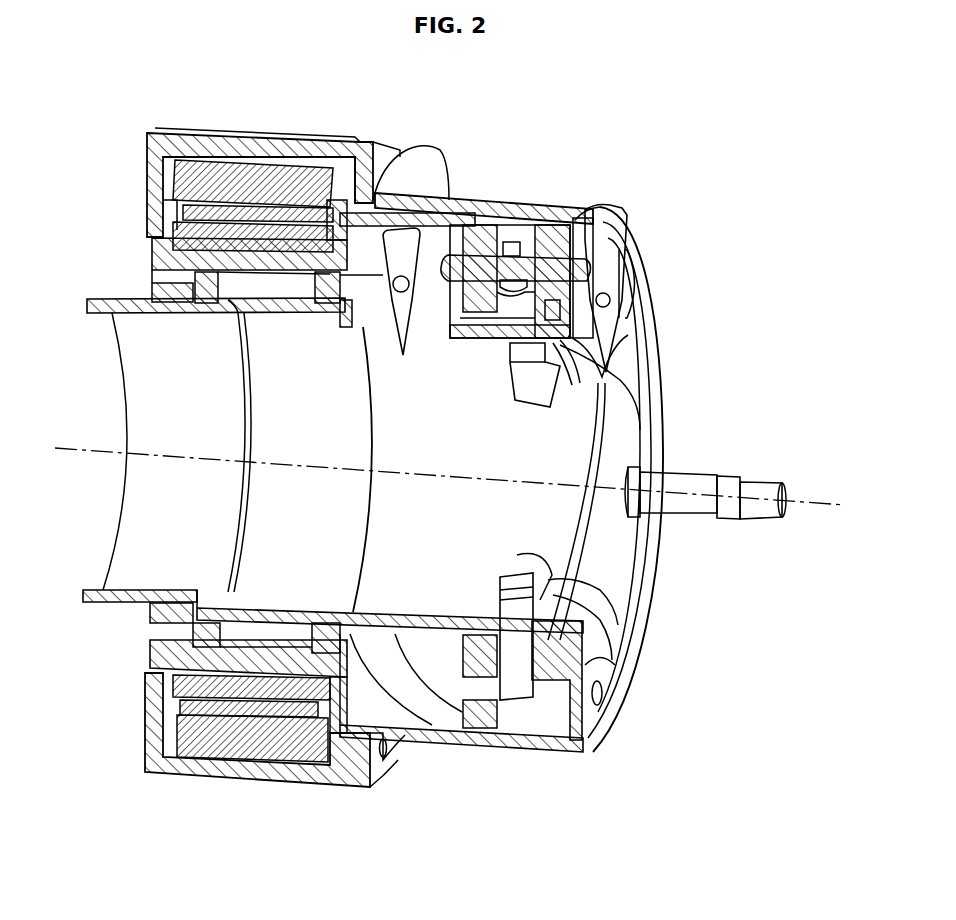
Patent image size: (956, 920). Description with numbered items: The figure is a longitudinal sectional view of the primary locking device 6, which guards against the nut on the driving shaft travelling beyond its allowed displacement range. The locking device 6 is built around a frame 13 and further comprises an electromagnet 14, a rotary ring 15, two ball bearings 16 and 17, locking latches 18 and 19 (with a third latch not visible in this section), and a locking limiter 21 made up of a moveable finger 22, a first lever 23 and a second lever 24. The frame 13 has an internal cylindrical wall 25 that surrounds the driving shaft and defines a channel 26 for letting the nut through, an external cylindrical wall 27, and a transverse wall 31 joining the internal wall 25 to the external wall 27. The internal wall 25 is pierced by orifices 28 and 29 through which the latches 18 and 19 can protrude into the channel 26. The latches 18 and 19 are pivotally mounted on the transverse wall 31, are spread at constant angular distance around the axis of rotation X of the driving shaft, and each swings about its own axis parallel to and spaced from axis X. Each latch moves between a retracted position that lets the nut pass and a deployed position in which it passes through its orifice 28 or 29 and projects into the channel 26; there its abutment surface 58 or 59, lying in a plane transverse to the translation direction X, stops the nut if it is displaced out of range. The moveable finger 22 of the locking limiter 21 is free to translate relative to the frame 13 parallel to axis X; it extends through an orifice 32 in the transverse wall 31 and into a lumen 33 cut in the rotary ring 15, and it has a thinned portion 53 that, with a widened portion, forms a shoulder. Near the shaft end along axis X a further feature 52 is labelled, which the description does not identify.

The primary locking device 6 is at (330, 105).
The frame 13 is at (510, 195).
The electromagnet 14 is at (233, 153).
The ring 15 is at (170, 253).
The ball bearing 16 is at (205, 300).
The ball bearing 17 is at (330, 300).
The locking latch 18 is at (578, 368).
The locking latch 19 is at (548, 582).
The locking limiter 21 is at (603, 280).
The moveable finger 22 is at (537, 258).
The first lever 23 is at (400, 318).
The second lever 24 is at (607, 240).
The internal cylindrical wall 25 is at (118, 588).
The channel 26 is at (150, 484).
The external cylindrical wall 27 is at (433, 142).
The orifice 28 is at (567, 362).
The orifice 29 is at (553, 597).
The transverse wall 31 is at (560, 322).
The orifice 32 is at (540, 270).
The lumen 33 is at (477, 260).
The shaft 52 is at (757, 487).
The thinned portion 53 is at (473, 262).
The abutment surface 58 is at (520, 347).
The abutment surface 59 is at (515, 580).
The axis of rotation X is at (830, 505).